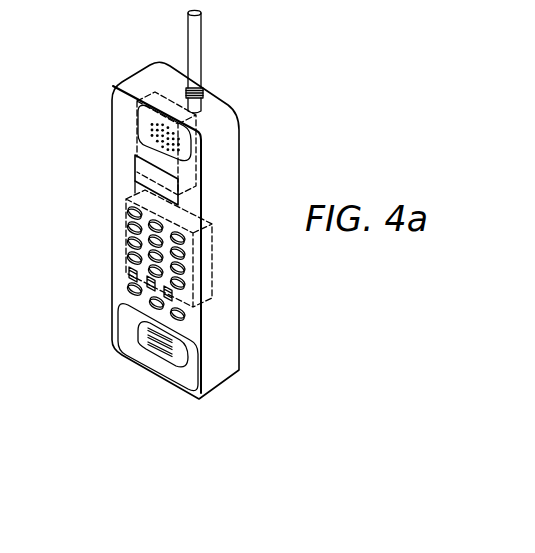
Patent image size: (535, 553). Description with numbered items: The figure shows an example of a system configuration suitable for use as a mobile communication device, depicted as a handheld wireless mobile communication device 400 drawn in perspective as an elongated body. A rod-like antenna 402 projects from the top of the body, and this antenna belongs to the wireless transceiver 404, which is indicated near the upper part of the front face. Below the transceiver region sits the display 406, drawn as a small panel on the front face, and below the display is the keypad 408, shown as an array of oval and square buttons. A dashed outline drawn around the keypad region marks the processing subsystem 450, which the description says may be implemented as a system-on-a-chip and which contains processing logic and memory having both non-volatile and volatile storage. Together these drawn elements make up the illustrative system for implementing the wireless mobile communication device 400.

The wireless mobile communication device 400 is at (232, 325).
The antenna 402 is at (200, 44).
The wireless transceiver 404 is at (134, 145).
The display 406 is at (135, 181).
The keypad 408 is at (125, 245).
The processing subsystem 450 is at (213, 258).